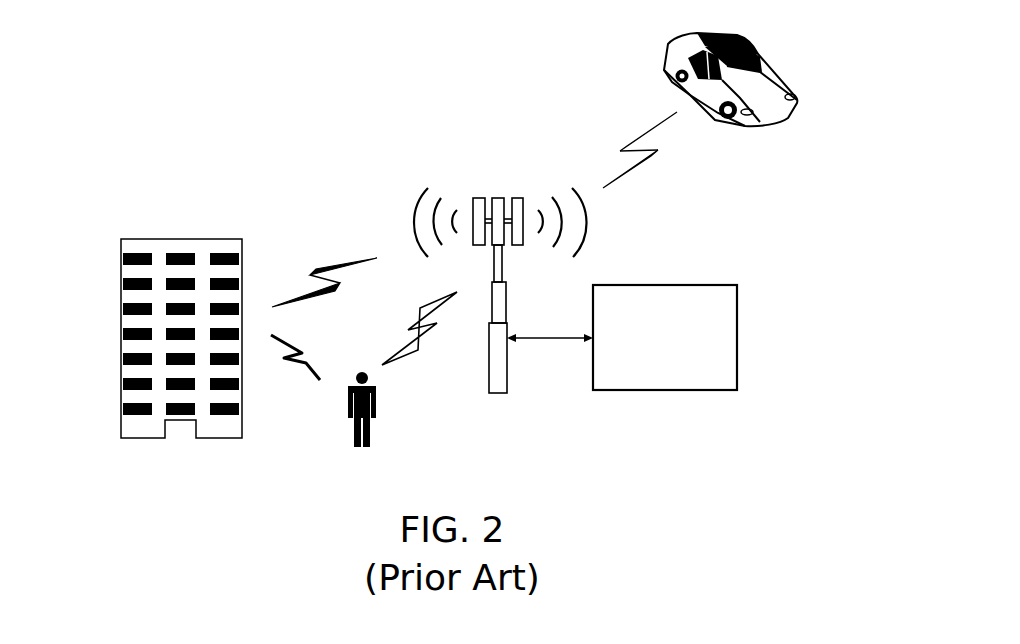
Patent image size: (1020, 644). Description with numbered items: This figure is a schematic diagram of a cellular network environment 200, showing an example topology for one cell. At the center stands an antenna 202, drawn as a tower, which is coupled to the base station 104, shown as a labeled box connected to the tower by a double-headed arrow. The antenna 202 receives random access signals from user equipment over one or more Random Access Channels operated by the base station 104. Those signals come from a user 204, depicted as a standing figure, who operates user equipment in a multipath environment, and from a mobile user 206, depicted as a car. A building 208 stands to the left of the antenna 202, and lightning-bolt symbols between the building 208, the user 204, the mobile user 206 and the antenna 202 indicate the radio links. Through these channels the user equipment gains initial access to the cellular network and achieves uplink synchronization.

The wireless communication system 200 is at (251, 122).
The antenna 202 is at (493, 198).
The user 204 is at (376, 388).
The mobile user 206 is at (778, 73).
The building 208 is at (121, 239).
The base station 104 is at (665, 337).